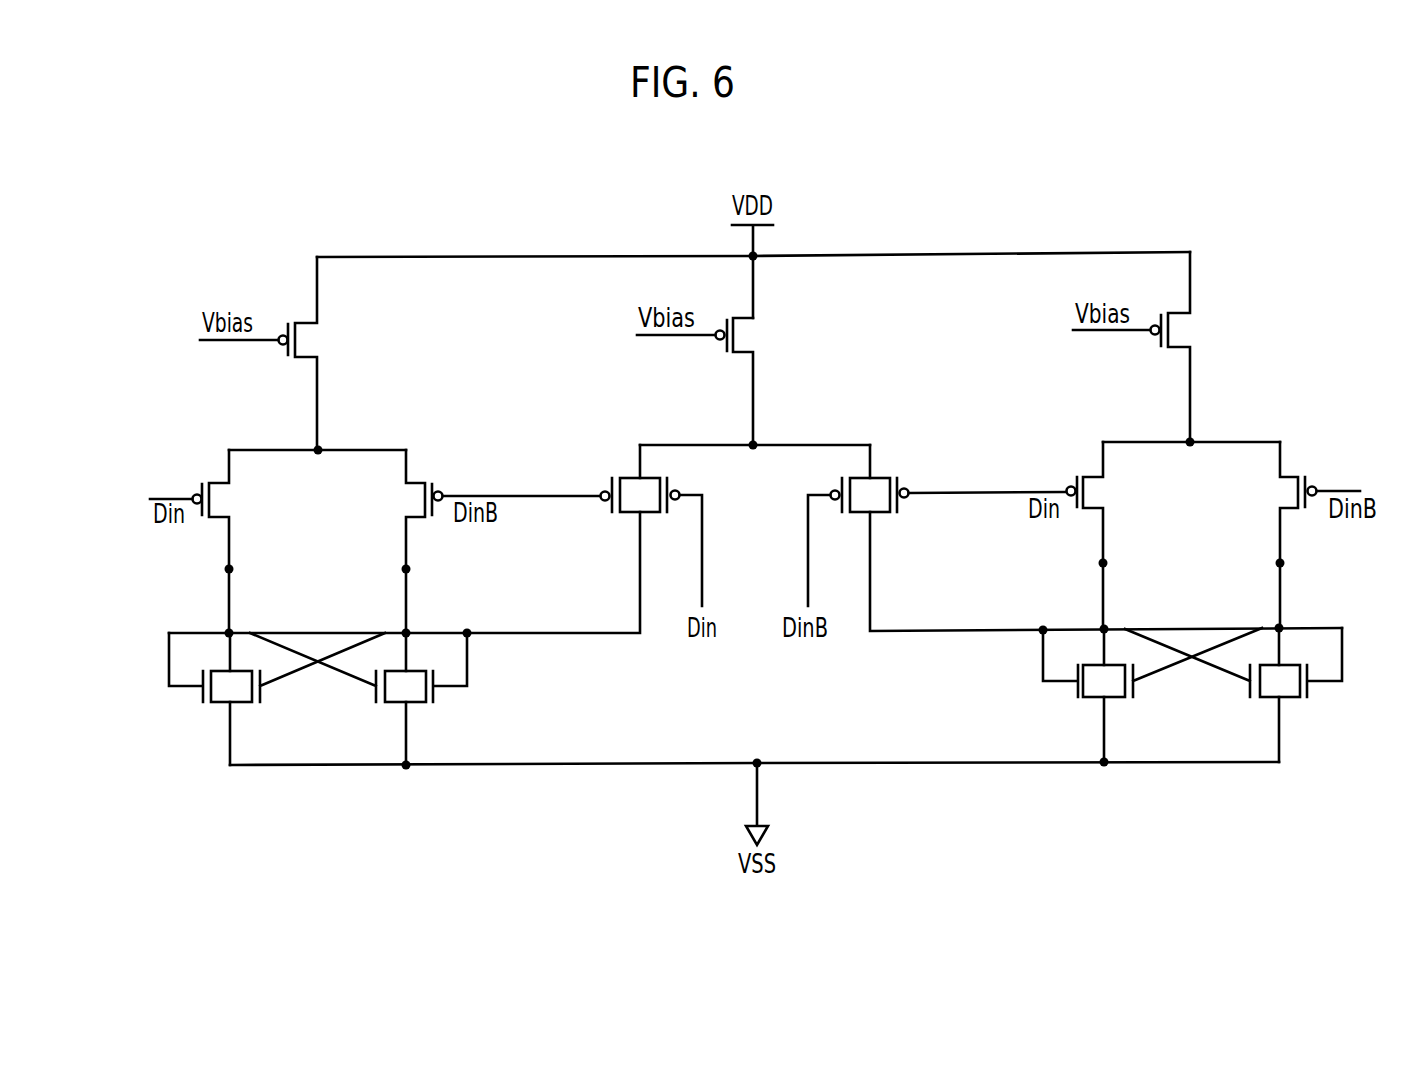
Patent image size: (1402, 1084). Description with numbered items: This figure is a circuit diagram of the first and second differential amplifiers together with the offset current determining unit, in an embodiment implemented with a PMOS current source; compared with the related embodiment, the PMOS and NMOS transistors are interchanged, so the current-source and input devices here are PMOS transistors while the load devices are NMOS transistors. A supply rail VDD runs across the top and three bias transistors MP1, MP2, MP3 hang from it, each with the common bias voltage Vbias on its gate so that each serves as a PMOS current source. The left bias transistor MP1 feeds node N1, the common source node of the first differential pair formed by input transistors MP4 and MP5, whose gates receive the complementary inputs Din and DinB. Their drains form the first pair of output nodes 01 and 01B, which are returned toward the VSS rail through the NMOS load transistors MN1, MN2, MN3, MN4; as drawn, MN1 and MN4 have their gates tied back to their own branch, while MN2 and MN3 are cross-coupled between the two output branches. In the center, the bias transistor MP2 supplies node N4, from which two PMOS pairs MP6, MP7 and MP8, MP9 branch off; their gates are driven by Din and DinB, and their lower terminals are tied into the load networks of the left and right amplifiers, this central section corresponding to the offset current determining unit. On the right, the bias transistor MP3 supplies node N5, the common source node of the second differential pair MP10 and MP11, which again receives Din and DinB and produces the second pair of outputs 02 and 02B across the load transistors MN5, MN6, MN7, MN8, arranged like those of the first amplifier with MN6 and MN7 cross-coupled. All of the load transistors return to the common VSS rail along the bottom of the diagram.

The PMOS bias transistor MP1 is at (321, 353).
The PMOS bias transistor MP2 is at (761, 381).
The PMOS bias transistor MP3 is at (1197, 347).
The PMOS input transistor MP4 is at (238, 541).
The PMOS input transistor MP5 is at (399, 541).
The PMOS transistor MP6 is at (613, 478).
The PMOS transistor MP7 is at (691, 483).
The PMOS transistor MP8 is at (842, 478).
The PMOS transistor MP9 is at (921, 482).
The PMOS input transistor MP10 is at (1113, 535).
The PMOS input transistor MP11 is at (1270, 535).
The NMOS transistor MN1 is at (205, 699).
The NMOS cross-coupled transistor MN2 is at (322, 683).
The NMOS cross-coupled transistor MN3 is at (338, 699).
The NMOS transistor MN4 is at (459, 683).
The NMOS transistor MN5 is at (1079, 695).
The NMOS cross-coupled transistor MN6 is at (1197, 677).
The NMOS cross-coupled transistor MN7 is at (1212, 695).
The NMOS transistor MN8 is at (1333, 677).
The node N1 is at (317, 467).
The node N4 is at (755, 463).
The node N5 is at (1191, 461).
The output node 01 is at (229, 569).
The complementary output node 01B is at (406, 569).
The output node 02 is at (1103, 563).
The complementary output node 02B is at (1280, 563).